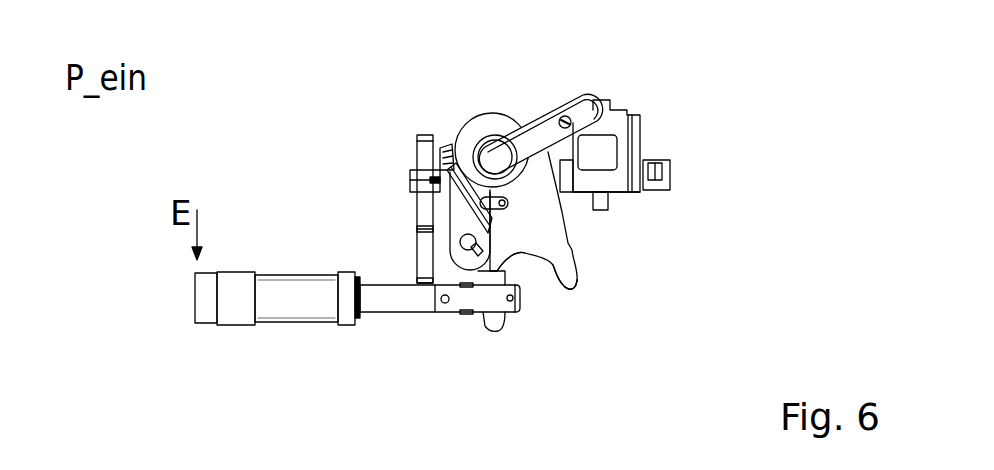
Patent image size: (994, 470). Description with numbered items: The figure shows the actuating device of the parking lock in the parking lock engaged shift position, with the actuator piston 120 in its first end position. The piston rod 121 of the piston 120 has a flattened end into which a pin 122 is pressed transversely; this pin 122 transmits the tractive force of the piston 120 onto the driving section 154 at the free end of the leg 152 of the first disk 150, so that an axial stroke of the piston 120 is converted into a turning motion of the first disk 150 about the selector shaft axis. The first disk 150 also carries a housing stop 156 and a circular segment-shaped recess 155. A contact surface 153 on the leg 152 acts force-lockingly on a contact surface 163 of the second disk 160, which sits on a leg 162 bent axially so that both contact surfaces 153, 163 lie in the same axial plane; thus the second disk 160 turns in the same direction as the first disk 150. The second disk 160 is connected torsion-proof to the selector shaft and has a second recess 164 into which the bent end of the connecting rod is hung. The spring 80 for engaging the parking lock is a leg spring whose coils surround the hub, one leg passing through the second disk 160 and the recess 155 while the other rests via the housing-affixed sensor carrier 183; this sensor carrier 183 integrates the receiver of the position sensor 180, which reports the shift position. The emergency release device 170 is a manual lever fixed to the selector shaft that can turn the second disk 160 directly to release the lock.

The spring 80 is at (560, 162).
The actuator piston 120 is at (343, 324).
The piston rod 121 is at (400, 304).
The pin 122 is at (517, 304).
The first disk 150 is at (530, 217).
The leg 152 is at (503, 274).
The contact surface 153 is at (481, 228).
The driving section 154 is at (492, 322).
The recess 155 is at (490, 197).
The housing stop 156 is at (587, 292).
The second disk 160 is at (466, 132).
The leg 162 is at (447, 237).
The contact surface 163 is at (508, 239).
The second recess 164 is at (455, 257).
The emergency release device 170 is at (547, 128).
The position sensor 180 is at (627, 198).
The sensor carrier 183 is at (419, 174).